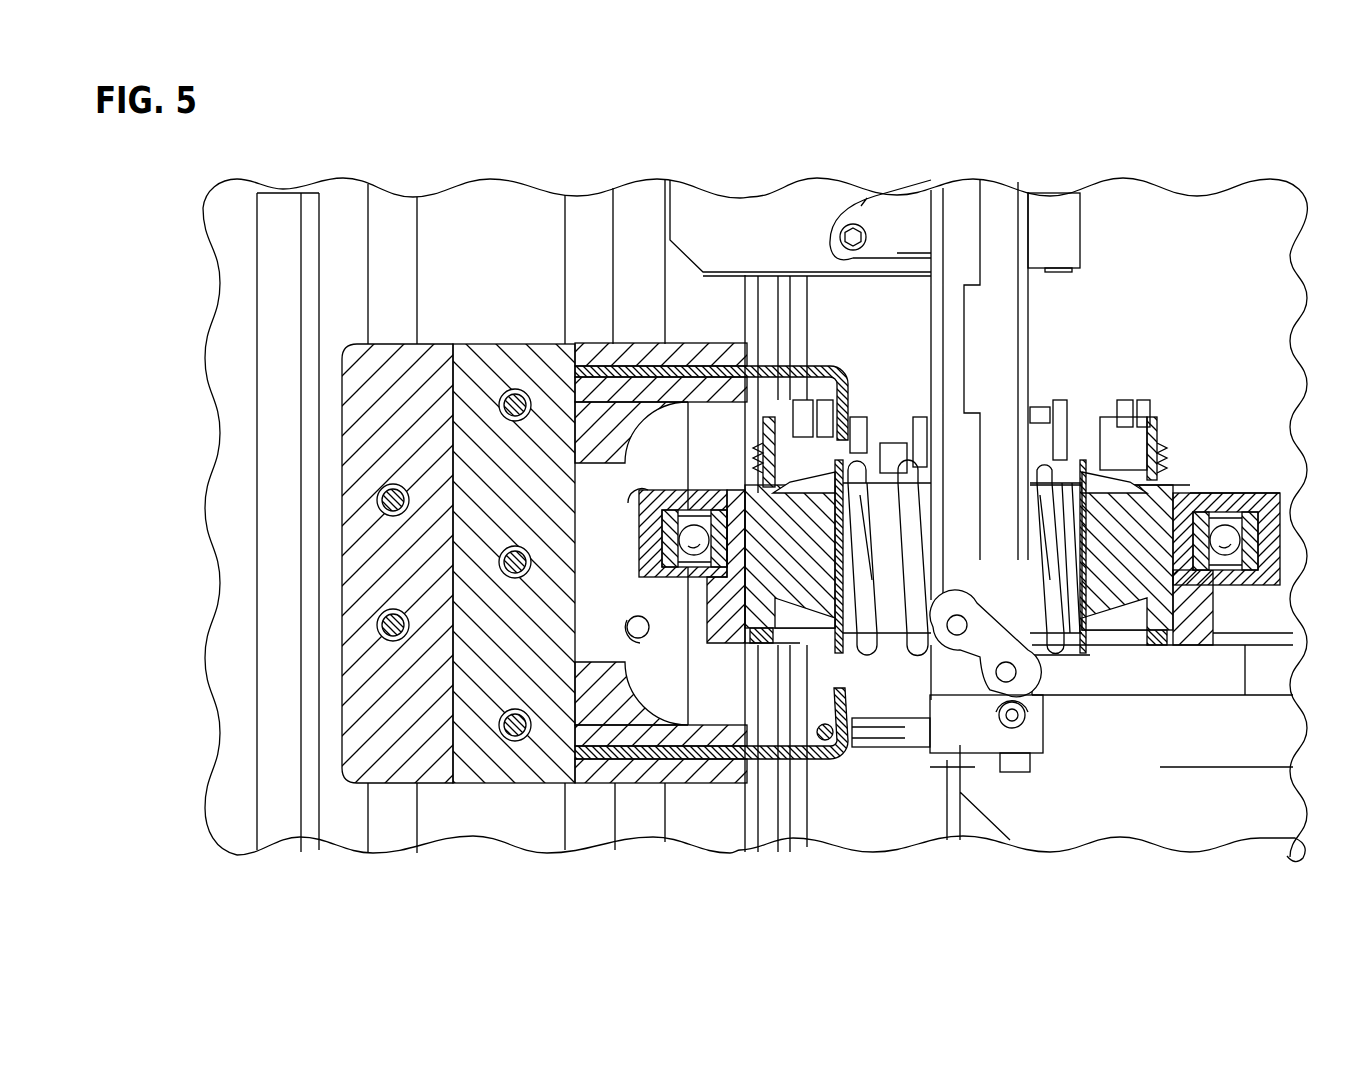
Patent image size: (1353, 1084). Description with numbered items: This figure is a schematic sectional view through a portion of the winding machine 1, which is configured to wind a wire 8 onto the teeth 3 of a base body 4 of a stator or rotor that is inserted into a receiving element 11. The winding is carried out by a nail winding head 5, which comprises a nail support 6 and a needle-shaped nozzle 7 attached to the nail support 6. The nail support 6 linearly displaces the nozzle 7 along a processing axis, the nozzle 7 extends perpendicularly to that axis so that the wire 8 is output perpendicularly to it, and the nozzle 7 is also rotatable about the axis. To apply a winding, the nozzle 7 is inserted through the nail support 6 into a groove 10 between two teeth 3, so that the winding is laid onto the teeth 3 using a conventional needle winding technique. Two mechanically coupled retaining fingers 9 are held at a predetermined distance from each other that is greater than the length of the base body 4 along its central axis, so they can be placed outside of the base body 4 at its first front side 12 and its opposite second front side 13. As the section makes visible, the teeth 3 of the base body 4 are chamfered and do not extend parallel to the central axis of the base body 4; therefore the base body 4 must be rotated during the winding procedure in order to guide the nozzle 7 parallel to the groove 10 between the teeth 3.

The winding machine 1 is at (470, 128).
The teeth 3 is at (897, 520).
The base body 4 is at (1143, 543).
The nail winding head 5 is at (1008, 783).
The nail support 6 is at (1000, 587).
The nozzle 7 is at (874, 737).
The wire 8 is at (830, 745).
The retaining finger 9 is at (768, 455).
The groove 10 is at (883, 607).
The receiving element 11 is at (1193, 607).
The first front side 12 is at (902, 433).
The second front side 13 is at (1160, 767).